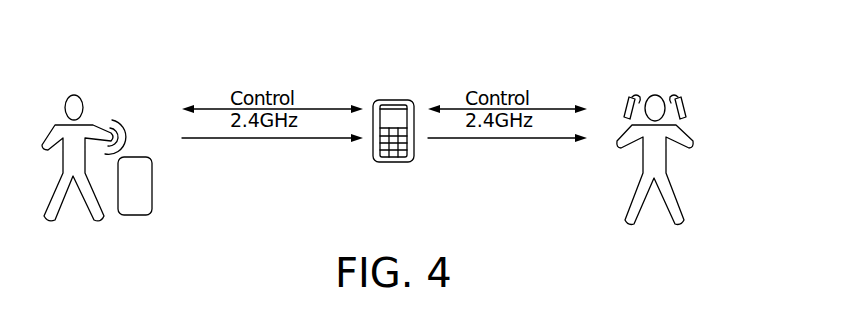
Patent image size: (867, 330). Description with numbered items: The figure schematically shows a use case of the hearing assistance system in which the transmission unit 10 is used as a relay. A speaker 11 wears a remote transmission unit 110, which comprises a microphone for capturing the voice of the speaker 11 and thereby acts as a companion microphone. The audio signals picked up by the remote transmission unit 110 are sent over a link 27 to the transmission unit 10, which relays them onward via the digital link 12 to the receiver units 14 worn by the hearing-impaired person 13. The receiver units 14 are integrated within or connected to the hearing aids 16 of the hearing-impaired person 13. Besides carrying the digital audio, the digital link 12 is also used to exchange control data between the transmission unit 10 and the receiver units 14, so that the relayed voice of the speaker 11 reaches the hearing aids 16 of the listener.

The transmission unit 10 is at (390, 98).
The speaker 11 is at (75, 93).
The digital link 12 is at (498, 170).
The hearing-impaired person 13 is at (657, 93).
The receiver unit 14 is at (677, 122).
The hearing aid 16 is at (636, 94).
The digital audio link from remote microphone 27 is at (268, 170).
The remote transmission unit 110 is at (145, 193).